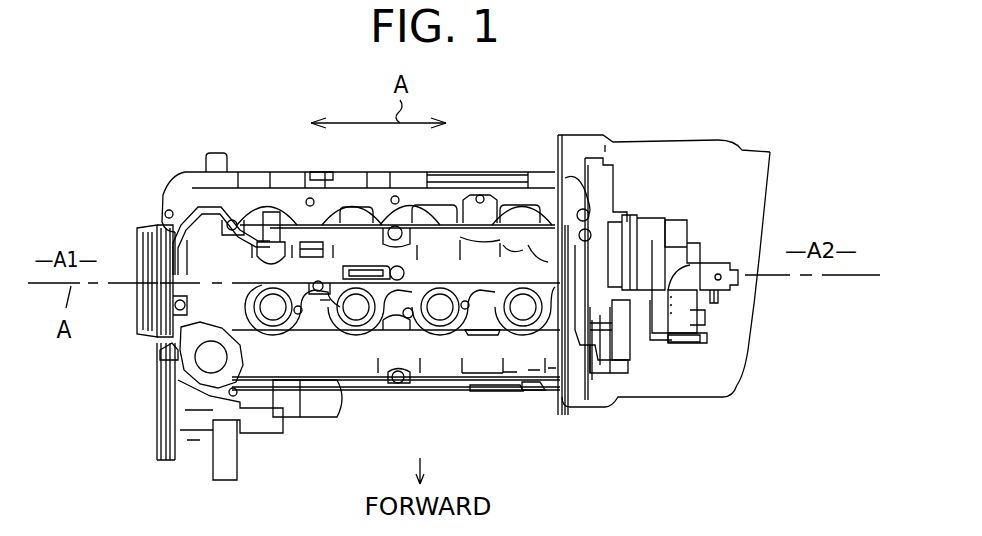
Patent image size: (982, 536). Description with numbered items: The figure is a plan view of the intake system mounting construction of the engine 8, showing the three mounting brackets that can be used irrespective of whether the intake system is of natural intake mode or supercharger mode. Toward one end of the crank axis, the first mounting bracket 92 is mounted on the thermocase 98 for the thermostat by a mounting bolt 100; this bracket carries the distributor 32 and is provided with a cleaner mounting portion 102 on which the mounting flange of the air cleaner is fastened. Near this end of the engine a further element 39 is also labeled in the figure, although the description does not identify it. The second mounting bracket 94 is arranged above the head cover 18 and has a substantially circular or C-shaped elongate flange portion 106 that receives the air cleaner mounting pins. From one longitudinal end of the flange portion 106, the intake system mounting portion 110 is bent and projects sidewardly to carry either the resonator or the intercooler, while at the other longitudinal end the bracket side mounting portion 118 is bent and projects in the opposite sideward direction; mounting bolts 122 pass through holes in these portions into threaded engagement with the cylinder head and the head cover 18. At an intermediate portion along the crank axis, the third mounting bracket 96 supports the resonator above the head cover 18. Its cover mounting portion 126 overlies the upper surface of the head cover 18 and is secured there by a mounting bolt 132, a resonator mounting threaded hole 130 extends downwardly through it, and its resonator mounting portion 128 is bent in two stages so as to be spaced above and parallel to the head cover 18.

The engine 8 is at (166, 170).
The head cover 18 is at (167, 350).
The resonator mounting threaded hole 130 is at (318, 282).
The resonator mounting portion 128 is at (326, 312).
The third mounting bracket 96 is at (373, 263).
The cover mounting portion 126 is at (372, 280).
The mounting bolt 132 is at (401, 279).
The intake system mounting portion 110 is at (502, 390).
The mounting bolts 122 is at (525, 388).
The second mounting bracket 94 is at (548, 255).
The bracket side mounting portion 118 is at (568, 186).
The distributor 32 is at (650, 233).
The cleaner mounting portion 102 is at (718, 263).
The first mounting bracket 92 is at (708, 317).
The mounting bolt 100 is at (703, 350).
The ring gear 39 is at (662, 343).
The thermocase 98 is at (633, 318).
The flange portion 106 is at (577, 350).